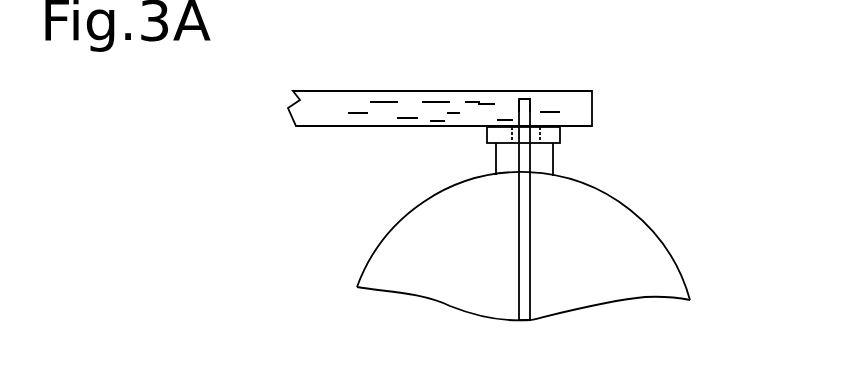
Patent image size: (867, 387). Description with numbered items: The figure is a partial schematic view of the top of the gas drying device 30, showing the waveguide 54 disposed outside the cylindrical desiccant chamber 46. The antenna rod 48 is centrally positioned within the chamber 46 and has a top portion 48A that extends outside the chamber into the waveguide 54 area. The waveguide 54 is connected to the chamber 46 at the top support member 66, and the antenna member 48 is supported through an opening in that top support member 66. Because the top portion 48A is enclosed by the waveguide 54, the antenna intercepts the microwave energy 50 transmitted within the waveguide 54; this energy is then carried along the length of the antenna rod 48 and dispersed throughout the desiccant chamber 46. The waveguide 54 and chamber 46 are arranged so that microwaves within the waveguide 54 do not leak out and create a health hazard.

The gas drying device 30 is at (686, 107).
The cylindrical desiccant chamber 46 is at (650, 223).
The antenna rod 48 is at (531, 292).
The top portion of the antenna 48A is at (530, 99).
The microwave energy 50 is at (357, 101).
The waveguide 54 is at (411, 91).
The top support member 66 is at (553, 160).